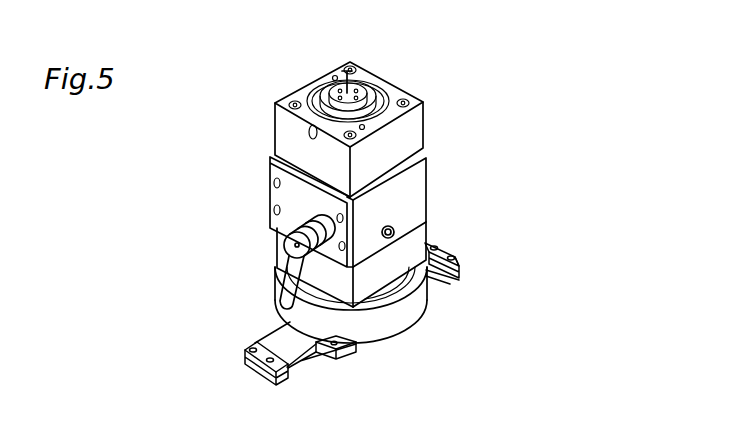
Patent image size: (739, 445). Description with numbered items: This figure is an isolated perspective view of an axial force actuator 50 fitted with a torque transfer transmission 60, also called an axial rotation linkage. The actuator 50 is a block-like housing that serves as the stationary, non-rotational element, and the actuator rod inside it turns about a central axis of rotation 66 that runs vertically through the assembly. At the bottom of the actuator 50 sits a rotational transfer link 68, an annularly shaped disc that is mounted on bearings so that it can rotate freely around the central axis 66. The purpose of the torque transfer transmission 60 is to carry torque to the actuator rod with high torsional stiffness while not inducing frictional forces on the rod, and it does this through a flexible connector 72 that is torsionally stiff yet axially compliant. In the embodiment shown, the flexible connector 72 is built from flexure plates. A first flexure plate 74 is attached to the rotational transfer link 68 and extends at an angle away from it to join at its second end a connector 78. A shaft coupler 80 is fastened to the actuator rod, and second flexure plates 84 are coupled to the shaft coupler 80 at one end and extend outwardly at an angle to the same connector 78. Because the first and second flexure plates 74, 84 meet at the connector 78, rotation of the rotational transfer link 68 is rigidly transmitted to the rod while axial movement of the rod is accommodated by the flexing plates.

The axial force actuator 50 is at (418, 188).
The torque transfer transmission 60 is at (200, 337).
The central axis of rotation 66 is at (347, 56).
The rotational transfer link 68 is at (400, 318).
The flexible connector 72 is at (440, 294).
The first flexure plate 74 is at (273, 341).
The connector 78 is at (250, 370).
The shaft coupler 80 is at (353, 347).
The second flexure plates 84 is at (302, 362).